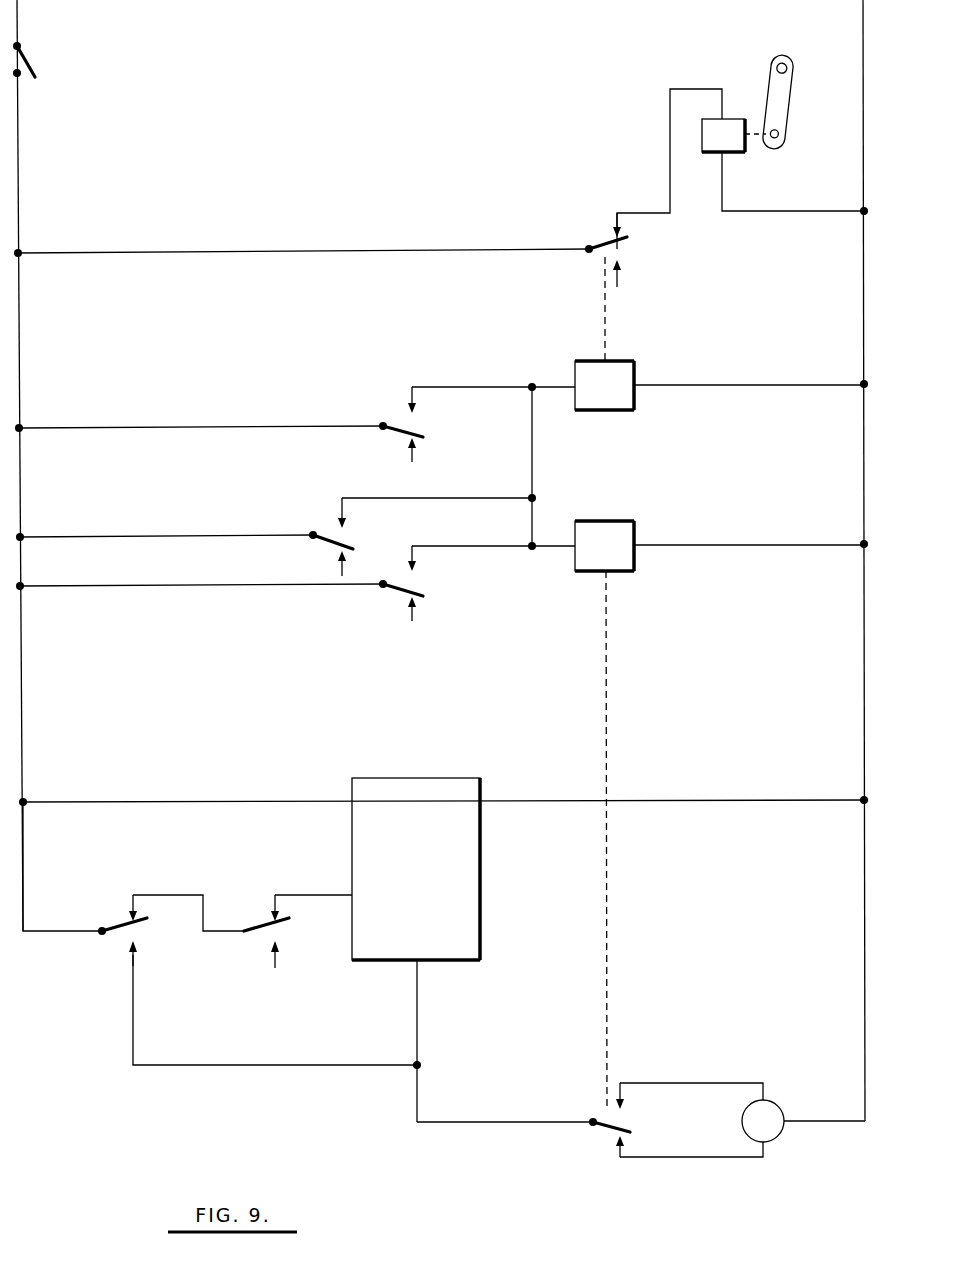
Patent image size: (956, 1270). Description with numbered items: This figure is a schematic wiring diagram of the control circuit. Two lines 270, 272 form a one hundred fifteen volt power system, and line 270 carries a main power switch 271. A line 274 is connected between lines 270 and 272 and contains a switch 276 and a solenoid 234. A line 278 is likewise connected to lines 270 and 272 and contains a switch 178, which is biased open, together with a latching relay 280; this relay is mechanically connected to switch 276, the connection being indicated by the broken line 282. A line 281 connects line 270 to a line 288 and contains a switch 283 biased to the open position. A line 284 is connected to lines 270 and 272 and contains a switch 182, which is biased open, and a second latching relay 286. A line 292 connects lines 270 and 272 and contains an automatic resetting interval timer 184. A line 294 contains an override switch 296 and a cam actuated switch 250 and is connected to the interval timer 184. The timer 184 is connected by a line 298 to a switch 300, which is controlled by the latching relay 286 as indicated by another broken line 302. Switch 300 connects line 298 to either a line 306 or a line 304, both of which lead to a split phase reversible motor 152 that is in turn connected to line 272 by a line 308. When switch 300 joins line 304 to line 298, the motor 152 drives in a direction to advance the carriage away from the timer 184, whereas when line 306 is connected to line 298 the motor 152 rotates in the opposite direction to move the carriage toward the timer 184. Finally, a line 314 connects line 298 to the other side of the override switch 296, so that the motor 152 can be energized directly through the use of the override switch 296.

The line 270 is at (18, 195).
The main power switch 271 is at (30, 61).
The line 272 is at (862, 40).
The line 274 is at (245, 251).
The switch 276 is at (598, 241).
The solenoid 234 is at (735, 152).
The mechanical connection 282 is at (604, 341).
The latching relay 280 is at (634, 362).
The latching relay 286 is at (634, 522).
The line 288 is at (530, 474).
The line 278 is at (154, 427).
The switch 178 is at (397, 436).
The line 281 is at (155, 536).
The switch 283 is at (327, 544).
The line 284 is at (153, 585).
The switch 182 is at (397, 594).
The line 292 is at (154, 801).
The automatic resetting interval timer 184 is at (391, 868).
The line 294 is at (70, 930).
The override switch 296 is at (120, 936).
The cam actuated switch 250 is at (258, 937).
The line 298 is at (417, 1037).
The line 314 is at (215, 1066).
The switch 300 is at (607, 1133).
The broken line 302 is at (607, 962).
The line 306 is at (650, 1083).
The line 304 is at (654, 1157).
The line 308 is at (835, 1119).
The split phase reversible motor 152 is at (779, 1136).